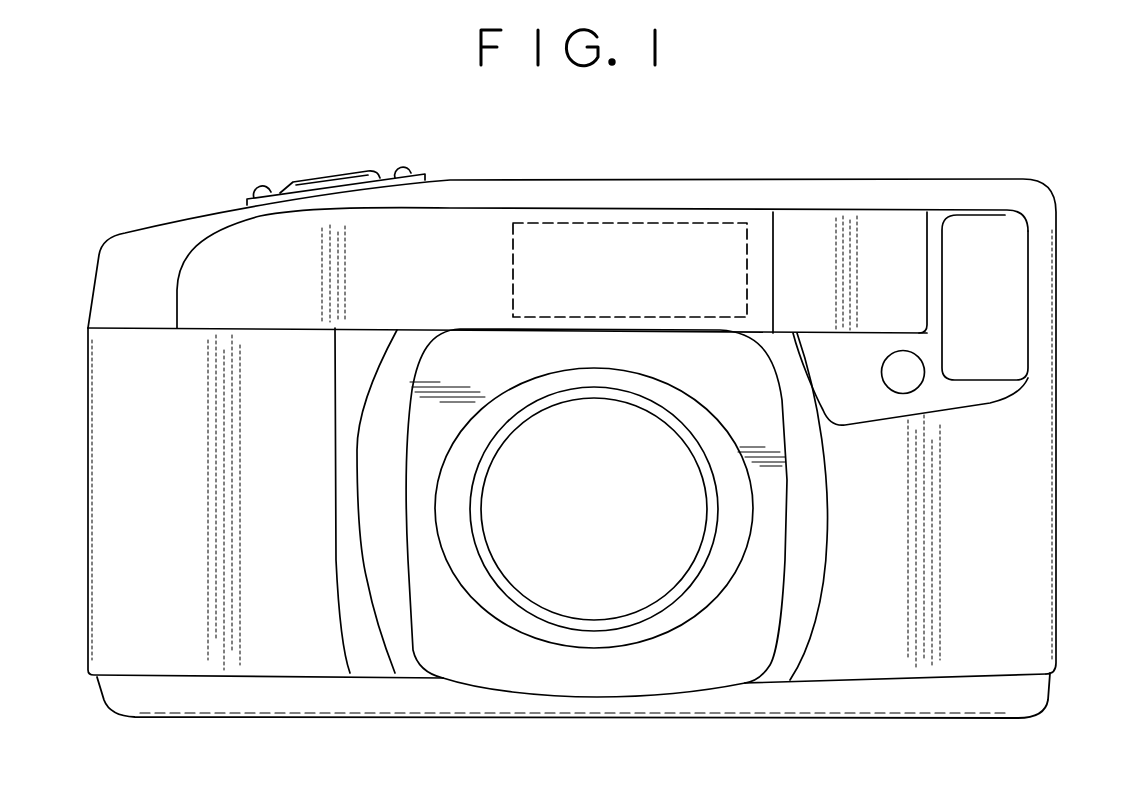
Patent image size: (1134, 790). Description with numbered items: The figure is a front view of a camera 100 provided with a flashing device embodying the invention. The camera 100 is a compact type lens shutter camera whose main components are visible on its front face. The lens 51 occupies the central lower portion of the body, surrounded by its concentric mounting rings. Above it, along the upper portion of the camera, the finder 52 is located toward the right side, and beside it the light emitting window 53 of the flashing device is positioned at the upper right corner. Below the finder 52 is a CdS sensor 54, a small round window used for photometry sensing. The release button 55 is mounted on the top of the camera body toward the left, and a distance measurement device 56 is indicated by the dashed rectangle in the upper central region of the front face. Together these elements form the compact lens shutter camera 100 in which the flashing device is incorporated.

The camera 100 is at (131, 200).
The lens 51 is at (590, 727).
The finder 52 is at (903, 225).
The light emitting window 53 is at (1012, 288).
The CdS sensor 54 is at (897, 394).
The release button 55 is at (330, 170).
The distance measurement device 56 is at (645, 233).